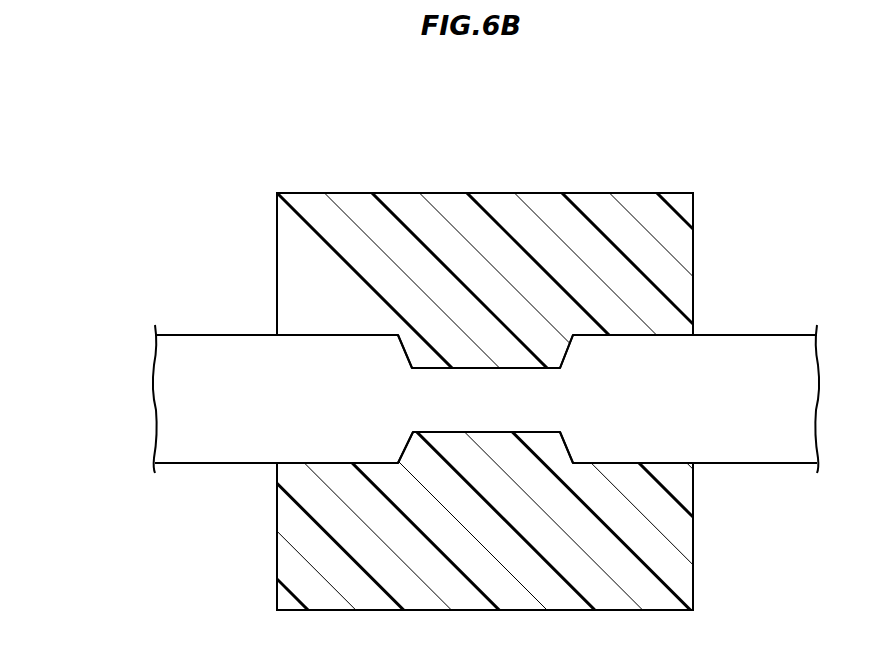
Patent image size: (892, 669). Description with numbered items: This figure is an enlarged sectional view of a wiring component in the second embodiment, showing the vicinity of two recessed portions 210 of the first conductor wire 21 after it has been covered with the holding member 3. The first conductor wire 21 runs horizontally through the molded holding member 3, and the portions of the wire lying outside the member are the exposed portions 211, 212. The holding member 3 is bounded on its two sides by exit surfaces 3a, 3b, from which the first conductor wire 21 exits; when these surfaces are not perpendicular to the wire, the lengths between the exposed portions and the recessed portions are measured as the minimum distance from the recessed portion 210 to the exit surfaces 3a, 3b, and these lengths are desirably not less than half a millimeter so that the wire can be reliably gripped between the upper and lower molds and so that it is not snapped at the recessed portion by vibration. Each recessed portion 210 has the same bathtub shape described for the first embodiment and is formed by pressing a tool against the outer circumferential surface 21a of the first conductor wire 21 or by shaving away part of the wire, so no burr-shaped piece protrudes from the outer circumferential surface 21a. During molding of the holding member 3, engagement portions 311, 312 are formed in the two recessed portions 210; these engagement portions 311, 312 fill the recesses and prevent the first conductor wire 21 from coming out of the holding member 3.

The holding member 3 is at (477, 193).
The exit surface 3a is at (277, 488).
The exit surface 3b is at (693, 487).
The first conductor wire 21 is at (192, 334).
The exposed portion 211 is at (278, 352).
The exposed portion 212 is at (699, 352).
The outer circumferential surface 21a is at (779, 334).
The recessed portion 210 is at (544, 348).
The engagement portion 311 is at (510, 353).
The engagement portion 312 is at (510, 461).